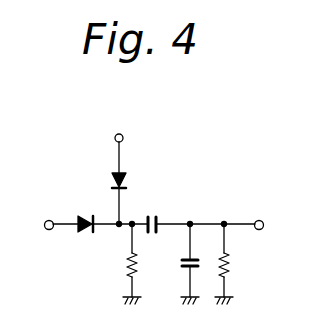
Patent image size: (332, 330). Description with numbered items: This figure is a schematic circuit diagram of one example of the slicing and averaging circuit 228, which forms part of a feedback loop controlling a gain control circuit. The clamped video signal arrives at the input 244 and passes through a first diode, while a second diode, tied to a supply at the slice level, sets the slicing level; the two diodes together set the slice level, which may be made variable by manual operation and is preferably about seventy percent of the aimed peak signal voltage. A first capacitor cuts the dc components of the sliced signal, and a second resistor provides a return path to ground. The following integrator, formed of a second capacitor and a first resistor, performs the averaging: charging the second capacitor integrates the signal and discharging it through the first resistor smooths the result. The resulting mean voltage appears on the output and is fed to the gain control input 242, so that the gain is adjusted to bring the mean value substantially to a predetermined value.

The slicing and averaging circuit 228 is at (208, 158).
The control input 242 is at (259, 220).
The input 244 is at (47, 229).